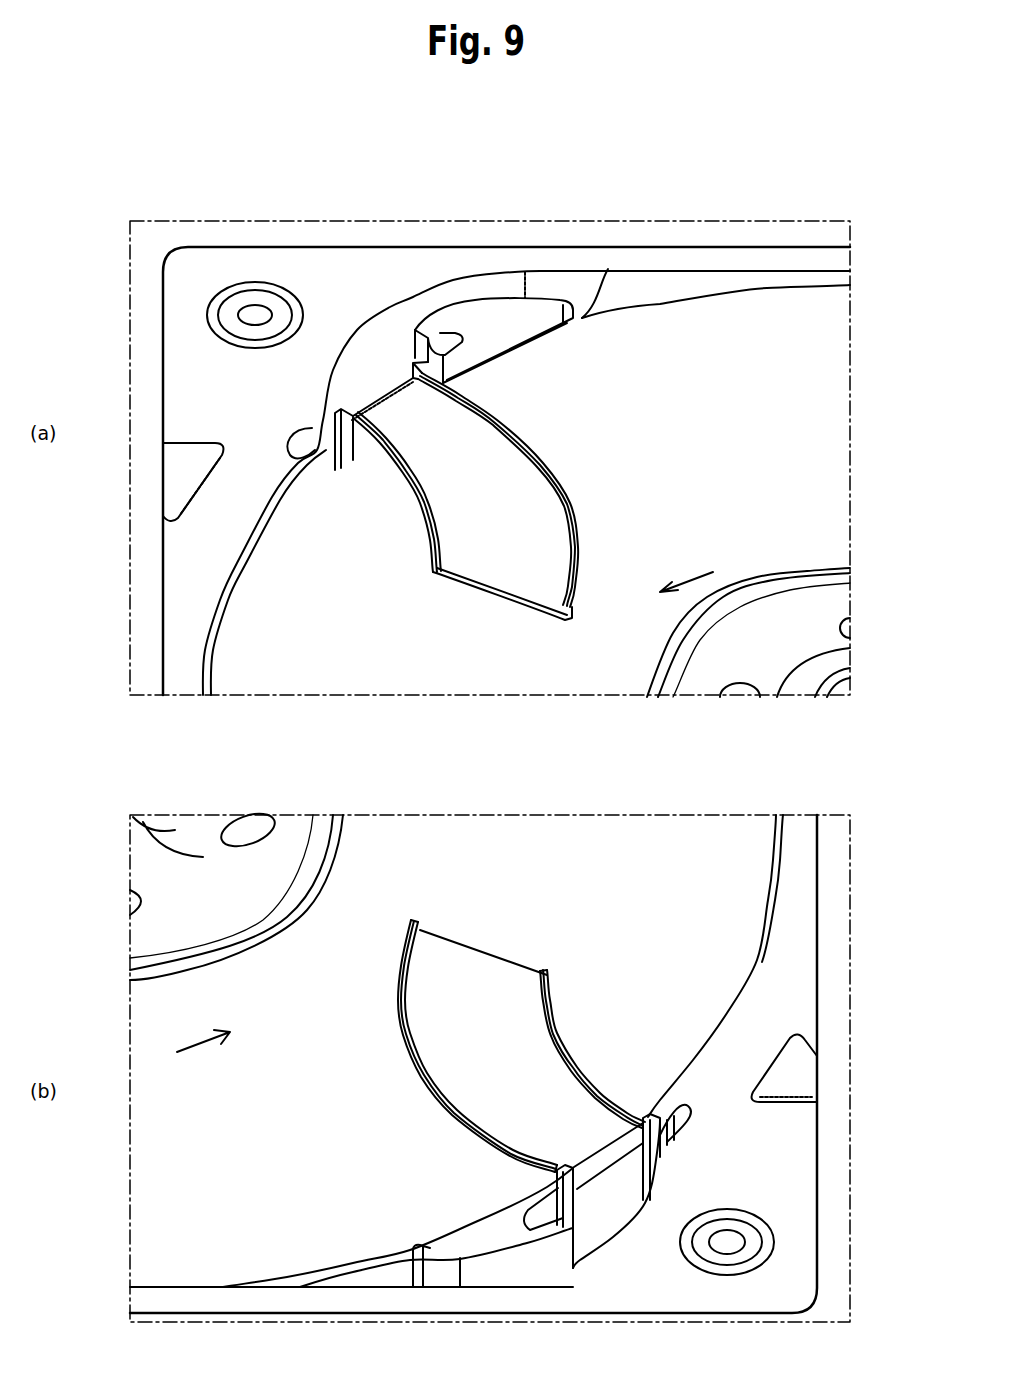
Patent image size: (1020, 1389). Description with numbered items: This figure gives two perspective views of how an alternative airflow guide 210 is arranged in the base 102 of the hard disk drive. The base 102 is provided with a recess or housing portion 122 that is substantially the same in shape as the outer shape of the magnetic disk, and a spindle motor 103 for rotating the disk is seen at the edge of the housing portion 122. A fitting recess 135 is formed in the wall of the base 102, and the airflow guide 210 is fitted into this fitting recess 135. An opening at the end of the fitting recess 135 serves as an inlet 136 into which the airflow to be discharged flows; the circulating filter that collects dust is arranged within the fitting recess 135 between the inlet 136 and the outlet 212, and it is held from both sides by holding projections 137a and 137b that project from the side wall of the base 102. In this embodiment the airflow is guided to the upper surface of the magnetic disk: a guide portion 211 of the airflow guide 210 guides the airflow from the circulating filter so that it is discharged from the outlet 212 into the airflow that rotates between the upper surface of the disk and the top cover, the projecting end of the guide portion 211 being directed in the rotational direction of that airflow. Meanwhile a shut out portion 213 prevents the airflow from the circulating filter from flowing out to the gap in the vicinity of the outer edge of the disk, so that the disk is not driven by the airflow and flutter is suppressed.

The base 102 is at (341, 256).
The spindle motor 103 is at (773, 623).
The recess (housing portion) 122 is at (350, 688).
The fitting recess 135 is at (360, 347).
The inlet 136 is at (608, 269).
The holding projection 137a is at (320, 453).
The holding projection 137b is at (424, 328).
The airflow guide 210 is at (501, 764).
The guide portion 211 is at (563, 477).
The outlet 212 is at (504, 430).
The shut out portion 213 is at (597, 1230).